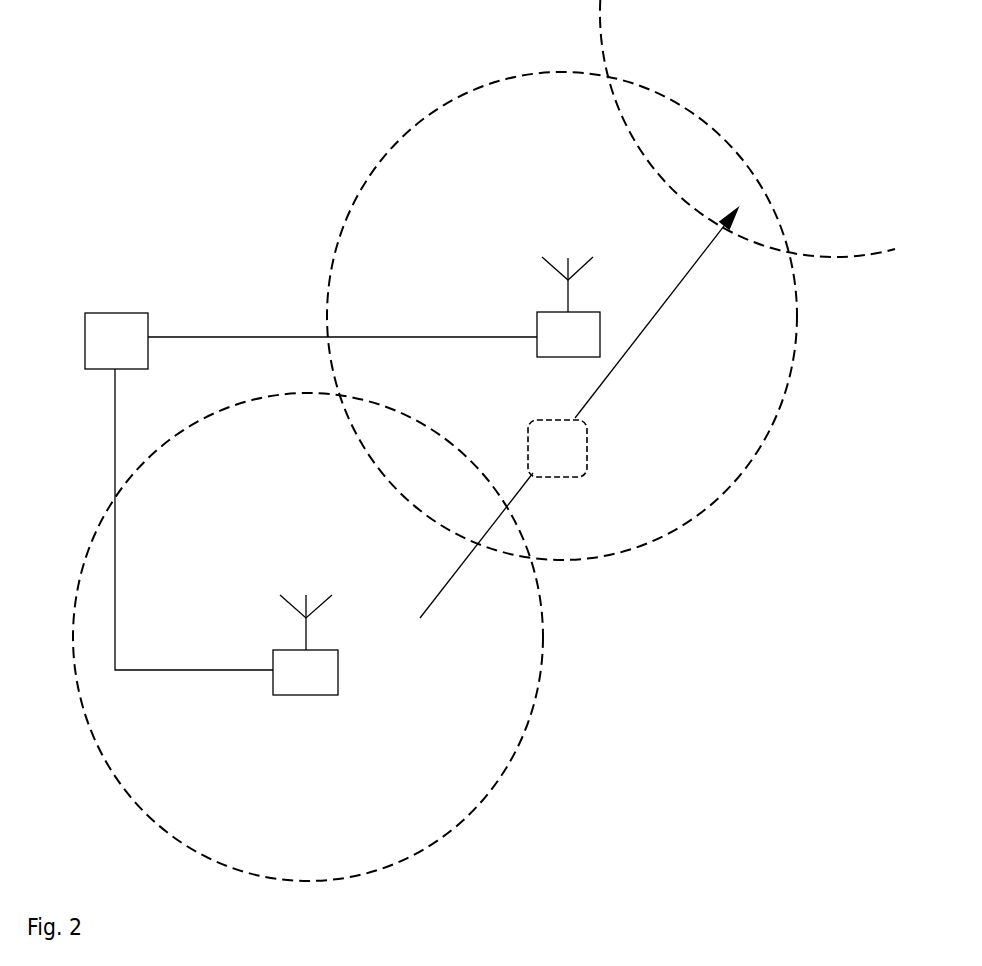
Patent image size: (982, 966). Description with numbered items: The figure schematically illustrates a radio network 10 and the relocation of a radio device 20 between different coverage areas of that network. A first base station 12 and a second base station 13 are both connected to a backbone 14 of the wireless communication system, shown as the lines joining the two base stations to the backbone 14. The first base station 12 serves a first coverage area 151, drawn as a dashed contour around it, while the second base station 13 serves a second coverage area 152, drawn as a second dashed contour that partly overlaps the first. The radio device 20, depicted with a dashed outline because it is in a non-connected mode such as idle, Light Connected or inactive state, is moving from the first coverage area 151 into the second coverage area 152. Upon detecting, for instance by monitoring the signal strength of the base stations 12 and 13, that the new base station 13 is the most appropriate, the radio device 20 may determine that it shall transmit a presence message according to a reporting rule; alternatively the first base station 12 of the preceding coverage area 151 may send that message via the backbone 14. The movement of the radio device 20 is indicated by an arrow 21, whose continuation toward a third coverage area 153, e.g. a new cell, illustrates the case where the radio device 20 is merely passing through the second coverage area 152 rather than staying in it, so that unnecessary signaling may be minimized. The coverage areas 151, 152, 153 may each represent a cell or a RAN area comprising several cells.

The radio network 10 is at (245, 258).
The first base station 12 is at (305, 645).
The second base station 13 is at (568, 307).
The backbone 14 is at (116, 341).
The radio device 20 is at (557, 448).
The movement path of mobile terminal 21 is at (623, 368).
The first coverage area 151 is at (437, 744).
The second coverage area 152 is at (480, 216).
The third coverage area 153 is at (847, 214).